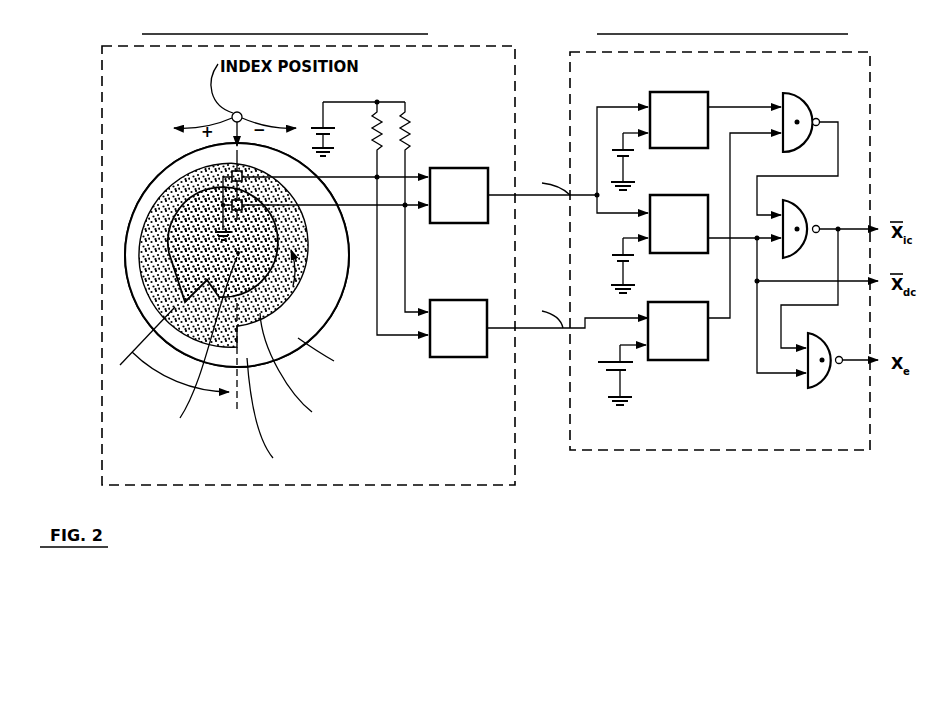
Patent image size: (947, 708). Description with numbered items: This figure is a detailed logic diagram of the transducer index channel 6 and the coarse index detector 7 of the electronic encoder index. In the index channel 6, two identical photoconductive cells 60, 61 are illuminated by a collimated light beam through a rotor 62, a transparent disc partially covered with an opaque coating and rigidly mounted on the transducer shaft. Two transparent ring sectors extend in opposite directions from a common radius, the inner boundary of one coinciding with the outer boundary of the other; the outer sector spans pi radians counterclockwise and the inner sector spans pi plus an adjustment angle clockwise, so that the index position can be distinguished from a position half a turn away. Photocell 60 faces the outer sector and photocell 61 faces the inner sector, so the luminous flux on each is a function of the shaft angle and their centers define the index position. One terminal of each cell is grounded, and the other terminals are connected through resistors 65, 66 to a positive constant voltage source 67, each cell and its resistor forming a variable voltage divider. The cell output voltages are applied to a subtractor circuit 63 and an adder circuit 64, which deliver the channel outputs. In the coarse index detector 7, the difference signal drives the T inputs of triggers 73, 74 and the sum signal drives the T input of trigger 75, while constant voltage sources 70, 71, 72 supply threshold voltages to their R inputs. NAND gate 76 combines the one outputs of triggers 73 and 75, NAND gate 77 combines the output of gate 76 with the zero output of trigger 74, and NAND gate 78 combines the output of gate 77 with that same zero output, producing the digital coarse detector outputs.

The transducer index channel 6 is at (142, 58).
The coarse index detector 7 is at (836, 77).
The photoconductive cell 60 is at (236, 167).
The photoconductive cell 61 is at (244, 208).
The rotor 62 is at (133, 291).
The subtractor circuit 63 is at (447, 173).
The adder circuit 64 is at (450, 306).
The resistor 65 is at (372, 140).
The resistor 66 is at (410, 134).
The positive constant voltage source 67 is at (315, 128).
The constant voltage source 70 is at (630, 156).
The constant voltage source 71 is at (630, 261).
The constant voltage source 72 is at (633, 370).
The trigger 73 is at (680, 113).
The trigger 74 is at (680, 216).
The trigger 75 is at (680, 320).
The NAND gate 76 is at (796, 112).
The NAND gate 77 is at (796, 216).
The NAND gate 78 is at (818, 345).